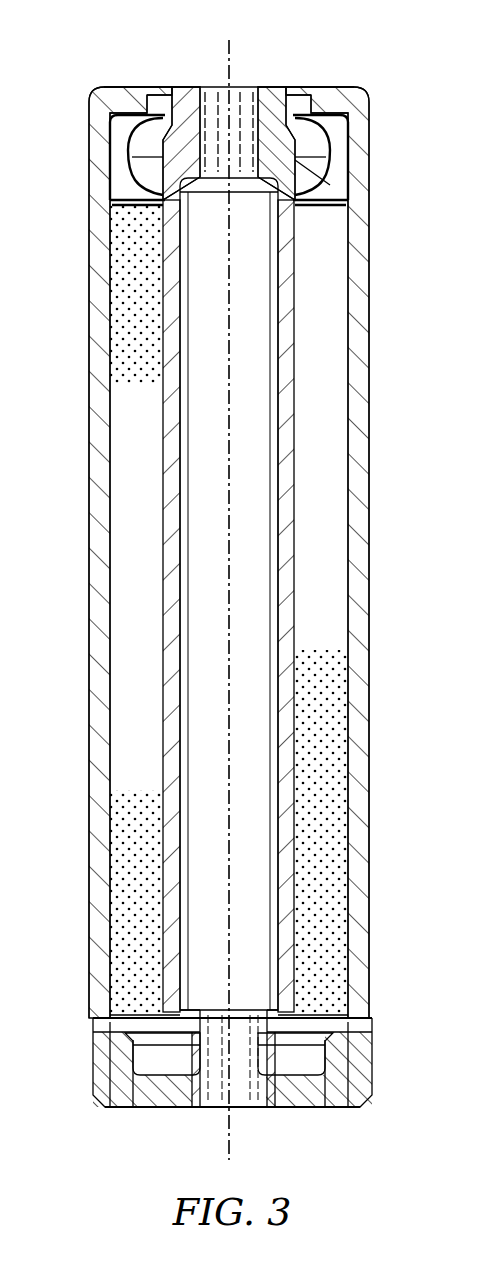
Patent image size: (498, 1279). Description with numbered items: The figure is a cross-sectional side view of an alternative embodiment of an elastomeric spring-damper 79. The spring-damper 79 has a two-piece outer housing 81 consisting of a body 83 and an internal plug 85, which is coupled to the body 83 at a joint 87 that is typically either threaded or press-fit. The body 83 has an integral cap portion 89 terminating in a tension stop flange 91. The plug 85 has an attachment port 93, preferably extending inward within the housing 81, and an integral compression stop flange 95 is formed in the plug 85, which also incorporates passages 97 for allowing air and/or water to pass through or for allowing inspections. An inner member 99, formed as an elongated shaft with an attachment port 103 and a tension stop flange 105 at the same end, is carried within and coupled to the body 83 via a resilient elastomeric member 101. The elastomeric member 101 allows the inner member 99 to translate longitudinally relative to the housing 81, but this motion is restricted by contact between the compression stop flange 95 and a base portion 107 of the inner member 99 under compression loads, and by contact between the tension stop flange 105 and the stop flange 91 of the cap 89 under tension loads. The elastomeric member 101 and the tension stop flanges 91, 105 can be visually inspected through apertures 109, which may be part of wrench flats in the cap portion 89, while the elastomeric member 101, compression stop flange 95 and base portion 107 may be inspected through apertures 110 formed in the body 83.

The spring-damper 79 is at (274, 60).
The outer housing 81 is at (379, 315).
The body 83 is at (371, 418).
The internal plug 85 is at (283, 1112).
The joint 87 is at (372, 1086).
The cap portion 89 is at (87, 152).
The tension stop flange 91 is at (333, 89).
The attachment port 93 is at (213, 1108).
The compression stop flange 95 is at (166, 1108).
The passages 97 is at (332, 1088).
The inner member 99 is at (304, 513).
The elastomeric member 101 is at (333, 590).
The attachment port 103 is at (212, 100).
The tension stop flange 105 is at (348, 176).
The base portion 107 is at (300, 1008).
The apertures 109 is at (353, 124).
The apertures 110 is at (93, 1020).